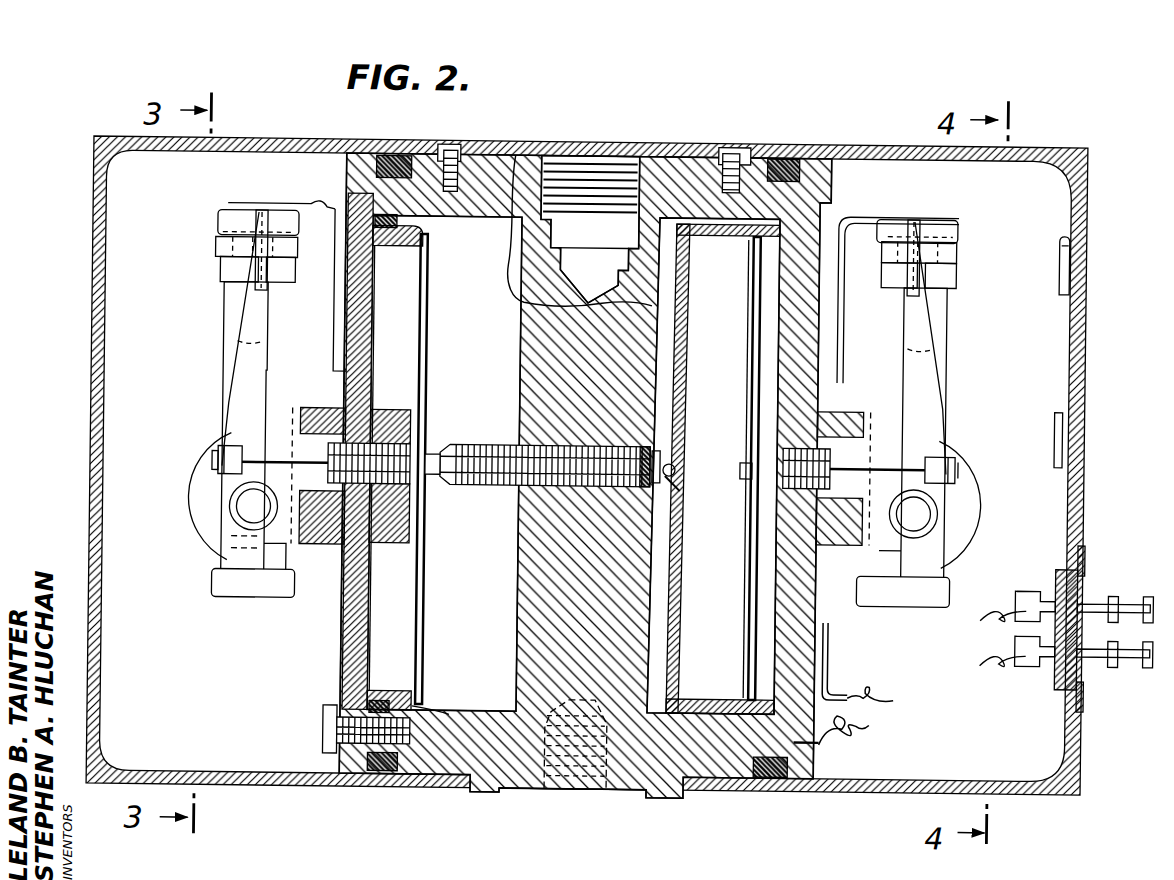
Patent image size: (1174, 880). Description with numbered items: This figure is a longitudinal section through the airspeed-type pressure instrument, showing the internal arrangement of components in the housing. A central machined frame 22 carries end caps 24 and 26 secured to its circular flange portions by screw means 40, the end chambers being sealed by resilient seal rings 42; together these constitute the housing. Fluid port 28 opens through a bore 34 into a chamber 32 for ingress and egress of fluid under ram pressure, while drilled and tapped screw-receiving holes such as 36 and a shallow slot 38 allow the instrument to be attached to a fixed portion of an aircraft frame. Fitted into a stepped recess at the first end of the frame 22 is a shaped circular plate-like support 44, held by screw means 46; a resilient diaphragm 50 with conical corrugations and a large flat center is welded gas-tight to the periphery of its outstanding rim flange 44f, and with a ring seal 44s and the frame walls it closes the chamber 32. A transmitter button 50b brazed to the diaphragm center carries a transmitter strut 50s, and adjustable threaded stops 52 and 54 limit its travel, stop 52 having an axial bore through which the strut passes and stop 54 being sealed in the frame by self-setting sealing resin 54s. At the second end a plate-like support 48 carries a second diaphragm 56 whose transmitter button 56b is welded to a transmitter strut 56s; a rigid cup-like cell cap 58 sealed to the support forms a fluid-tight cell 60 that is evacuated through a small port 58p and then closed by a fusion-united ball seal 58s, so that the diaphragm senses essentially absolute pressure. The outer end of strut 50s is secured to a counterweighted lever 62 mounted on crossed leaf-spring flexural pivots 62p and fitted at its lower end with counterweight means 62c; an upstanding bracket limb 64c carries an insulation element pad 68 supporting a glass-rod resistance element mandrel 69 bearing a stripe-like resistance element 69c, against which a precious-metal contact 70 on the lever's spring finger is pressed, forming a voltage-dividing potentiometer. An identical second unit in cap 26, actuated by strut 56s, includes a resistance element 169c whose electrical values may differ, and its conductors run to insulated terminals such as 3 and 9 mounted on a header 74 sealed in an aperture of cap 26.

The terminal 3 is at (1028, 590).
The terminal 9 is at (1026, 662).
The frame 22 is at (585, 476).
The end cap 24 is at (92, 382).
The end cap 26 is at (1082, 297).
The fluid port 28 is at (572, 154).
The chamber 32 is at (490, 366).
The bore 34 is at (545, 274).
The screw-receiving hole 36 is at (560, 797).
The shallow slot 38 is at (608, 797).
The screw means 40 is at (450, 150).
The resilient seal ring 42 is at (380, 776).
The plate-like support 44 is at (345, 624).
The ring seal 44s is at (380, 703).
The rim flange 44f is at (428, 708).
The screw means 46 is at (324, 732).
The plate-like support 48 is at (802, 624).
The resilient diaphragm 50 is at (428, 625).
The transmitter button 50b is at (440, 462).
The transmitter strut 50s is at (270, 458).
The adjustable stop 52 is at (376, 452).
The adjustable stop 54 is at (500, 490).
The sealing resin 54s is at (672, 482).
The pressure-sensitive diaphragm 56 is at (756, 608).
The transmitter button 56b is at (752, 462).
The transmitter strut 56s is at (930, 460).
The cell cap 58 is at (681, 563).
The port 58p is at (676, 472).
The ball seal 58s is at (680, 490).
The cell 60 is at (742, 328).
The counterweighted lever 62 is at (244, 553).
The counterweight means 62c is at (226, 591).
The flexural pivot 62p is at (252, 513).
The upstanding limb 64c is at (948, 316).
The insulation element pad 68 is at (287, 286).
The resistance element mandrel 69 is at (238, 240).
The resistance element 69c is at (278, 250).
The resistance element 169c is at (945, 270).
The contact 70 is at (246, 290).
The header 74 is at (1062, 586).